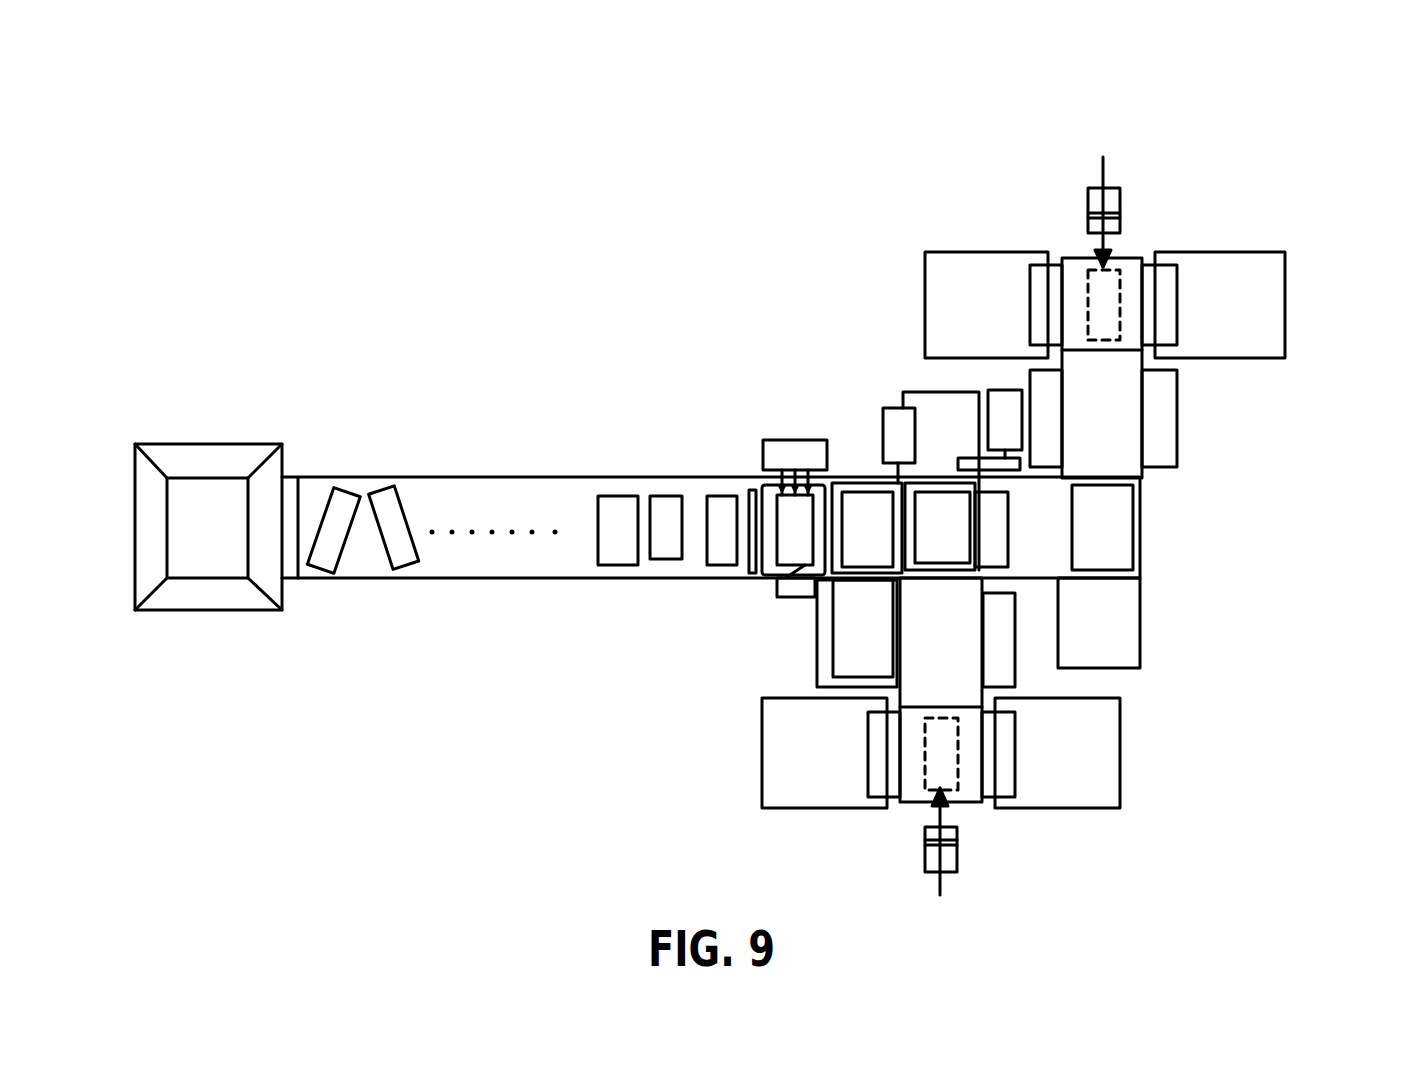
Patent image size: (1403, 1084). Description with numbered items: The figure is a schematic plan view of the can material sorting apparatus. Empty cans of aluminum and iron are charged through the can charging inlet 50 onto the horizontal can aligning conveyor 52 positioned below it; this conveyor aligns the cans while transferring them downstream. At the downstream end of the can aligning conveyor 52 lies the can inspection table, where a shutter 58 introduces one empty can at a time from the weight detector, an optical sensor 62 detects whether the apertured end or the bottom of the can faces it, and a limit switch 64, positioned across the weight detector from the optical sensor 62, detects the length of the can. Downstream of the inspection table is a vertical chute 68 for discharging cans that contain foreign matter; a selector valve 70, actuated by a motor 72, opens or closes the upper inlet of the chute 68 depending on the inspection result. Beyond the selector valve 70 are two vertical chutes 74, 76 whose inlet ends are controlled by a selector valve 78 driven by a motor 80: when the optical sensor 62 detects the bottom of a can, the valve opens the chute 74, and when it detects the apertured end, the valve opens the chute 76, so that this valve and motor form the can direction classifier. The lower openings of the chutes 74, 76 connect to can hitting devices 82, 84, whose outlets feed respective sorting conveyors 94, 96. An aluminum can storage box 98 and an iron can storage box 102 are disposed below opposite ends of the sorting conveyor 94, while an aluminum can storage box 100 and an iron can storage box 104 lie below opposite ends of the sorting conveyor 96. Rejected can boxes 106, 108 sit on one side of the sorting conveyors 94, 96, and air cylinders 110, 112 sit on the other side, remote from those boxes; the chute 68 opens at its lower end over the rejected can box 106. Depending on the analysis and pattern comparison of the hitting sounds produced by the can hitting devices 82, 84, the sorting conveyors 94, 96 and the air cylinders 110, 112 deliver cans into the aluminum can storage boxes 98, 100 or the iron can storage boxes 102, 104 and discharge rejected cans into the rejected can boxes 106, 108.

The can charging inlet 50 is at (215, 444).
The can aligning conveyor 52 is at (465, 478).
The shutter 58 is at (748, 520).
The optical sensor 62 is at (790, 440).
The limit switch 64 is at (790, 600).
The vertical chute 68 is at (830, 632).
The selector valve 70 is at (870, 505).
The motor 72 is at (897, 408).
The vertical chute 74 is at (940, 580).
The vertical chute 76 is at (1135, 540).
The selector valve 78 is at (955, 525).
The motor 80 is at (1003, 388).
The can hitting device 82 is at (923, 393).
The can hitting device 84 is at (1127, 598).
The sorting conveyor 94 is at (877, 770).
The sorting conveyor 96 is at (1178, 290).
The aluminum can storage box 98 is at (1110, 755).
The aluminum can storage box 100 is at (1253, 262).
The iron can storage box 102 is at (775, 765).
The iron can storage box 104 is at (977, 252).
The rejected can box 106 is at (1003, 672).
The rejected can box 108 is at (1163, 415).
The air cylinder 110 is at (958, 850).
The air cylinder 112 is at (1120, 205).